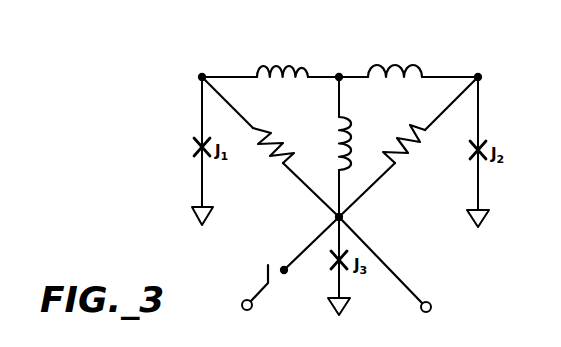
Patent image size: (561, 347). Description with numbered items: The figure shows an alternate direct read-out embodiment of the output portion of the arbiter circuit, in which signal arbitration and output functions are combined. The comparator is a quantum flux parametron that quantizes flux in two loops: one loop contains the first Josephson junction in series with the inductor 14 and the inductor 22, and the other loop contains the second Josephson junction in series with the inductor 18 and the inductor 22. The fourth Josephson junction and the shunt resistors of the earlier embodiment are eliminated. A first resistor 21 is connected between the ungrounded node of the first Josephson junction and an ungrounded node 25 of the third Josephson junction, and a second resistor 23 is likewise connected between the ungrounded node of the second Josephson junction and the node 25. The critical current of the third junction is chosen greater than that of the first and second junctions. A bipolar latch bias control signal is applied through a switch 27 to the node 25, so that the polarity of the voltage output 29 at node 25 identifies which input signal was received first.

The inductor 14 is at (309, 64).
The inductor 18 is at (420, 64).
The inductor 22 is at (345, 114).
The first resistor 21 is at (271, 164).
The second resistor 23 is at (398, 165).
The ungrounded node 25 is at (336, 217).
The switch 27 is at (243, 302).
The voltage output 29 is at (430, 303).